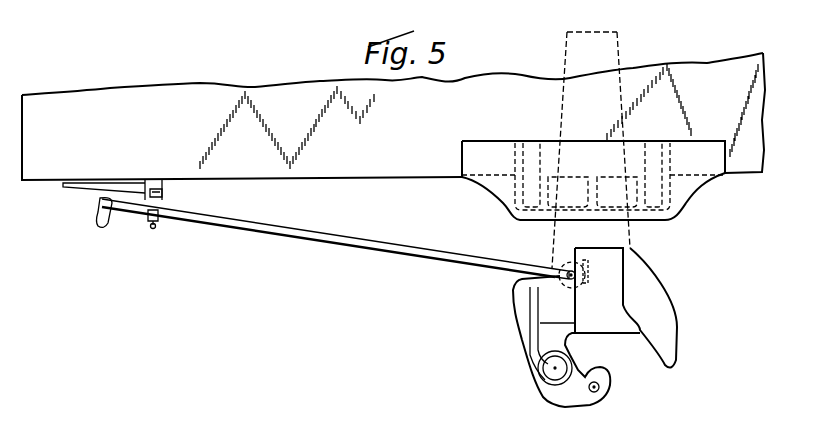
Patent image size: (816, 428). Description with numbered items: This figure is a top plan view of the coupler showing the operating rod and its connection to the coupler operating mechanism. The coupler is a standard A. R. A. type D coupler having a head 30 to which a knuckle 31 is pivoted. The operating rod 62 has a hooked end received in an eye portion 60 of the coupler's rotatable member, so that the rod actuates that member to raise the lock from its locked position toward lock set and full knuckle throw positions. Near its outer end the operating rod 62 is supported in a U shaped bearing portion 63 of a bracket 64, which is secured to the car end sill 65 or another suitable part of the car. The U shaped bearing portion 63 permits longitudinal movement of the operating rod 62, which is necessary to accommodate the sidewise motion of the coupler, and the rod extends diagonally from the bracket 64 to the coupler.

The head 30 is at (679, 330).
The knuckle 31 is at (606, 394).
The eye portion 60 is at (560, 265).
The operating rod 62 is at (354, 244).
The U shaped bearing portion 63 is at (163, 195).
The bracket 64 is at (141, 181).
The car end sill 65 is at (409, 172).